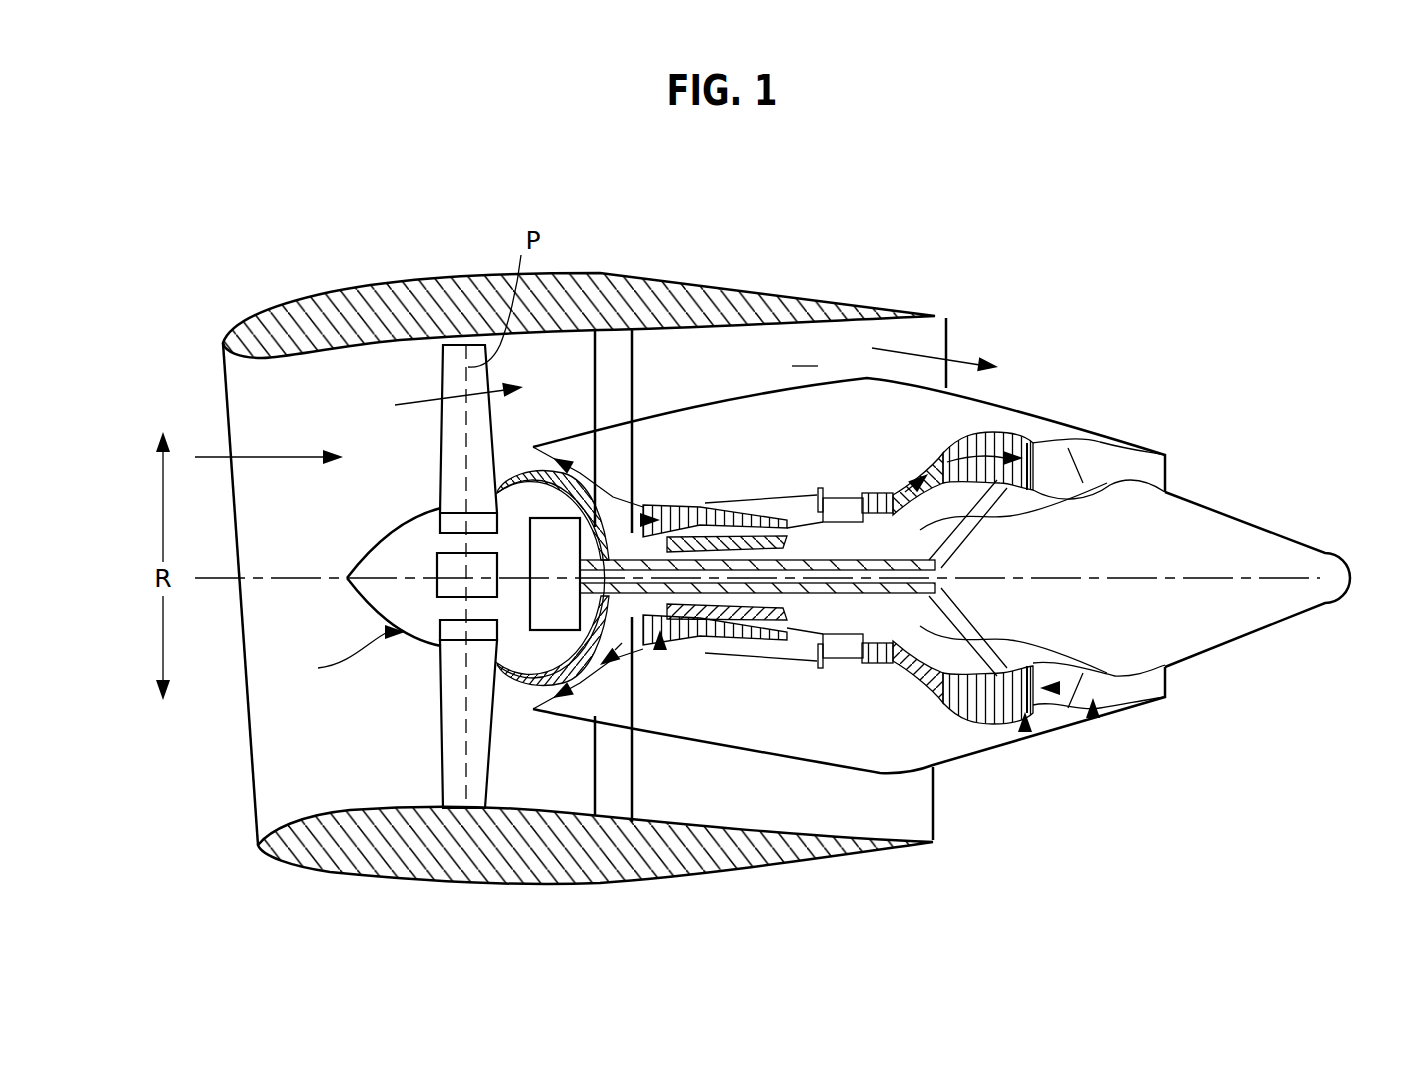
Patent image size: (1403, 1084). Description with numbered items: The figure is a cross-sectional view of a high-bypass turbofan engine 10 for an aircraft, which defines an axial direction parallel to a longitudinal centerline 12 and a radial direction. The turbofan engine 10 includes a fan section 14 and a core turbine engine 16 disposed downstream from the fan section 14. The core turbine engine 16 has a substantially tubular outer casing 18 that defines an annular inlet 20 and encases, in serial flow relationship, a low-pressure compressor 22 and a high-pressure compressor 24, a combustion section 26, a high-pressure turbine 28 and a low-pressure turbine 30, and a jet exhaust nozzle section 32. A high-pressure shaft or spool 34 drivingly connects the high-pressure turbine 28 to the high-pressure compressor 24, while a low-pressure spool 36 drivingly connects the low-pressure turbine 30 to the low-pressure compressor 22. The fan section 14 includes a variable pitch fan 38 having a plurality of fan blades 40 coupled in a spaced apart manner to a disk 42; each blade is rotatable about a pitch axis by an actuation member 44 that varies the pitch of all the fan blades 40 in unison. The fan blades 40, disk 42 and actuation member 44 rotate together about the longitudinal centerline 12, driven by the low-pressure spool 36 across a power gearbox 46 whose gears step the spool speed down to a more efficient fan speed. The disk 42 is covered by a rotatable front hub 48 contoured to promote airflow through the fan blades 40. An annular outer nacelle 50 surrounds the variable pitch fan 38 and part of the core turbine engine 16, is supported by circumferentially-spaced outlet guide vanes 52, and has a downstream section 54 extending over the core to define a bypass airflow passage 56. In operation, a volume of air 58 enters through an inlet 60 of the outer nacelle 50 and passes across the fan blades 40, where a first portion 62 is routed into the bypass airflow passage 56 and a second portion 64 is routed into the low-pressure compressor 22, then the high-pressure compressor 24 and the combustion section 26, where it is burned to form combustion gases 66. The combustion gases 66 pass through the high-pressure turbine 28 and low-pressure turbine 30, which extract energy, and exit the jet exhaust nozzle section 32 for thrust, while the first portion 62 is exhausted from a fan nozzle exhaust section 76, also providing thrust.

The turbofan engine 10 is at (1110, 236).
The longitudinal centerline 12 is at (1197, 578).
The fan section 14 is at (398, 365).
The core turbine engine 16 is at (780, 482).
The tubular outer casing 18 is at (764, 757).
The annular inlet 20 is at (535, 700).
The low-pressure compressor 22 is at (582, 630).
The high-pressure compressor 24 is at (660, 652).
The combustion section 26 is at (832, 676).
The high-pressure turbine 28 is at (1060, 688).
The low-pressure turbine 30 is at (1030, 735).
The jet exhaust nozzle section 32 is at (1097, 720).
The high-pressure shaft or spool 34 is at (1062, 475).
The low-pressure spool 36 is at (1117, 484).
The variable pitch fan 38 is at (344, 656).
The fan blades 40 is at (440, 735).
The disk 42 is at (458, 625).
The actuation member 44 is at (446, 585).
The power gearbox 46 is at (612, 505).
The rotatable front hub 48 is at (358, 583).
The outer nacelle 50 is at (382, 880).
The outlet guide vanes 52 is at (634, 371).
The downstream section 54 is at (882, 305).
The bypass airflow passage 56 is at (805, 352).
The volume of air 58 is at (262, 456).
The inlet 60 is at (250, 780).
The first portion of air 62 is at (422, 397).
The second portion of air 64 is at (505, 462).
The combustion gases 66 is at (980, 433).
The fan nozzle exhaust section 76 is at (928, 332).